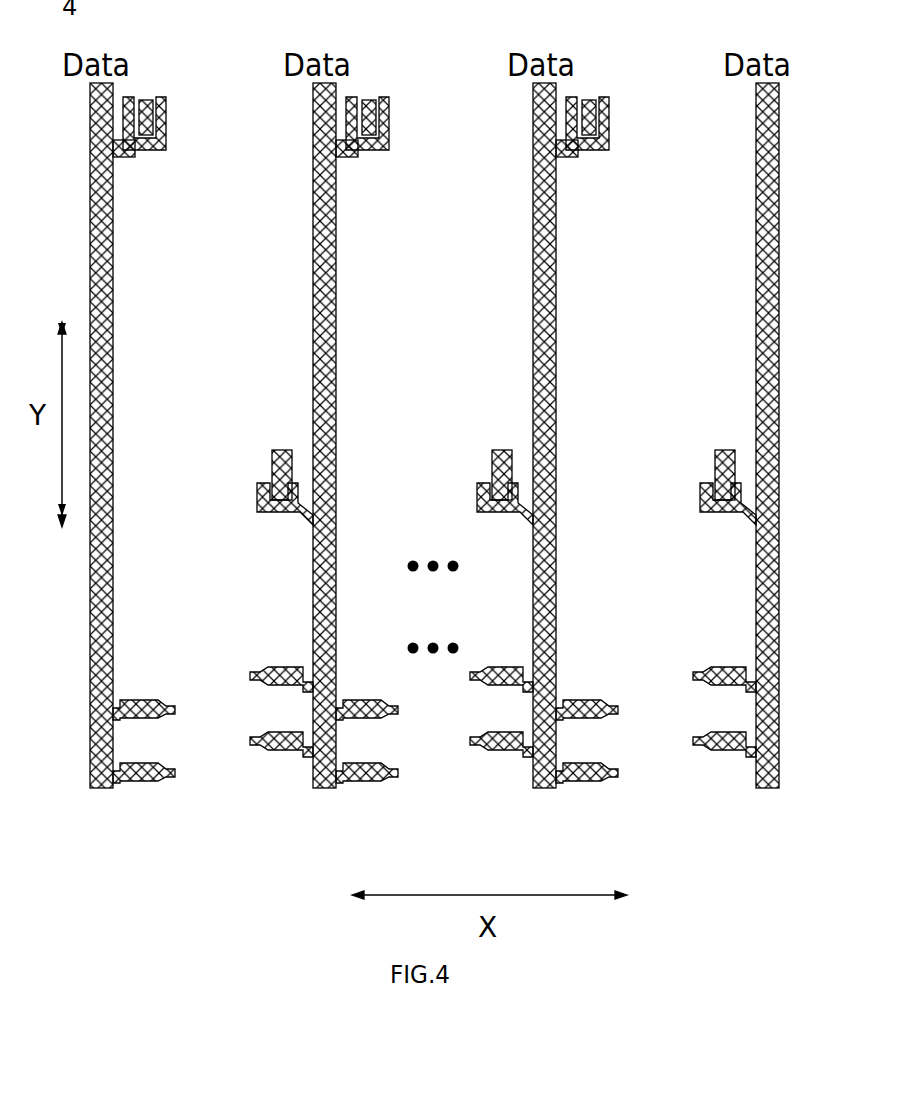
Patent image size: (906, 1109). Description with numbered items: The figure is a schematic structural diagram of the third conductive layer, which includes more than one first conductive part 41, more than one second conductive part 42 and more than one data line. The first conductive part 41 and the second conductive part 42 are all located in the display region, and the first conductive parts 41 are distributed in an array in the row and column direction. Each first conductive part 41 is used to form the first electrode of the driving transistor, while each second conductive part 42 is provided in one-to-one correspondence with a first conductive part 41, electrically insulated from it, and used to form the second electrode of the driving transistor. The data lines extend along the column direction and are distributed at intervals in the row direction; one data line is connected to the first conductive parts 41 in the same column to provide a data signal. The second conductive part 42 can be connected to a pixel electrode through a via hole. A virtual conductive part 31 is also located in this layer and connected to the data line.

The virtual conductive part 31 is at (175, 718).
The first conductive part 41 is at (130, 157).
The second conductive part 42 is at (147, 98).